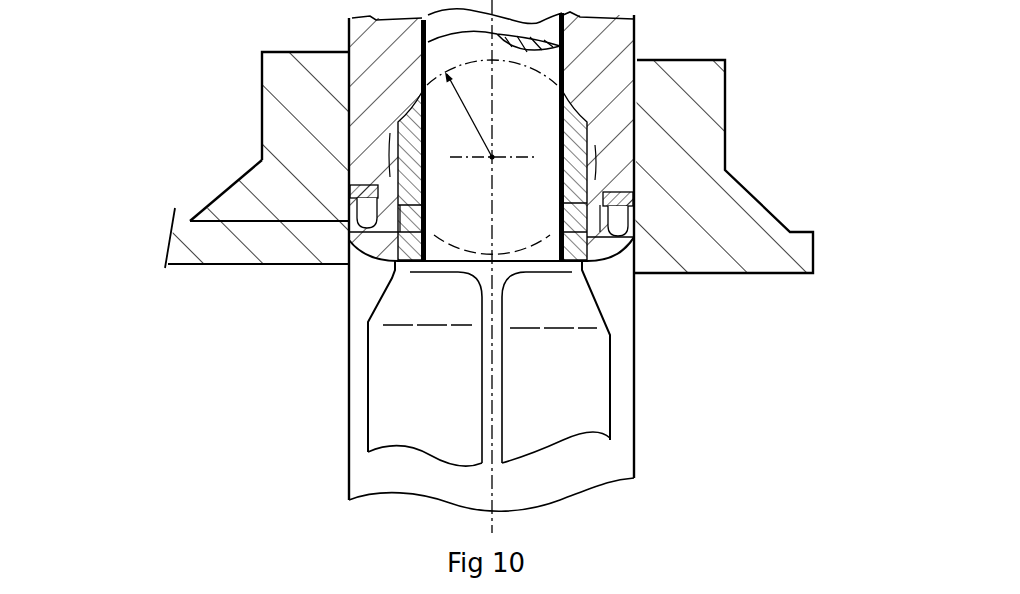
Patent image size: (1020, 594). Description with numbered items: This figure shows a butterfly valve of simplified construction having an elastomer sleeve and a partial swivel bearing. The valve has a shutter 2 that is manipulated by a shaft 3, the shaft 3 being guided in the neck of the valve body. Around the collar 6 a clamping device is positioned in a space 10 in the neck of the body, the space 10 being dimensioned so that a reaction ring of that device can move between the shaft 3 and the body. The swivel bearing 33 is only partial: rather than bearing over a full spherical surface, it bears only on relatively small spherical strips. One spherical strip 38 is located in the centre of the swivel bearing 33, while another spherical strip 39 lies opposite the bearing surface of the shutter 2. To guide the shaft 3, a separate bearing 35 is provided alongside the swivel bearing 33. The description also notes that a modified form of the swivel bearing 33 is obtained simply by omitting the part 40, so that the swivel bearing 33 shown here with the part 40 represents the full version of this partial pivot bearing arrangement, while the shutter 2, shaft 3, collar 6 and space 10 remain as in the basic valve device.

The shutter 2 is at (407, 360).
The shaft 3 is at (450, 123).
The collar 6 is at (645, 270).
The space 10 is at (192, 221).
The swivel bearing 33 is at (592, 135).
The bearing 35 is at (423, 61).
The spherical strip 38 is at (597, 163).
The spherical strip 39 is at (570, 100).
The part 40 is at (637, 238).